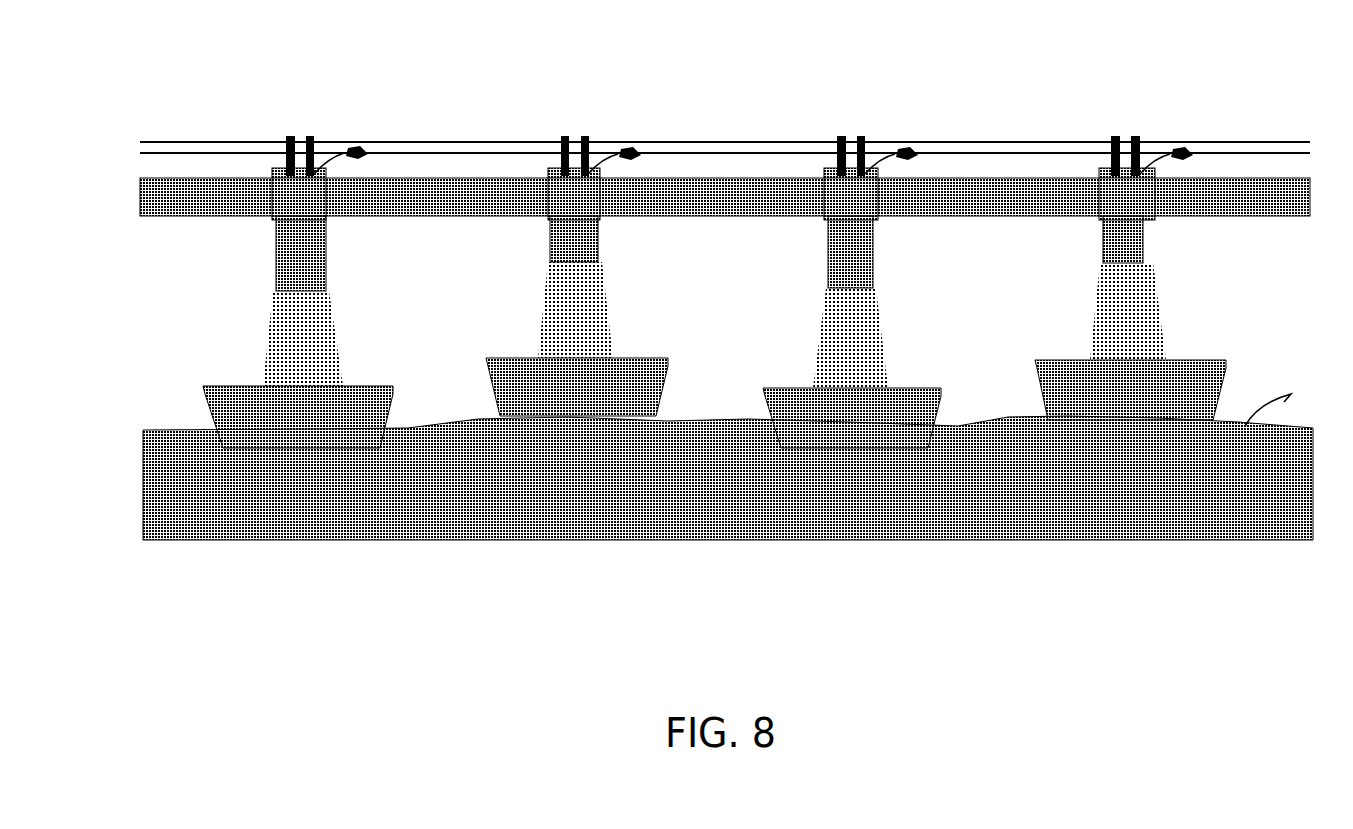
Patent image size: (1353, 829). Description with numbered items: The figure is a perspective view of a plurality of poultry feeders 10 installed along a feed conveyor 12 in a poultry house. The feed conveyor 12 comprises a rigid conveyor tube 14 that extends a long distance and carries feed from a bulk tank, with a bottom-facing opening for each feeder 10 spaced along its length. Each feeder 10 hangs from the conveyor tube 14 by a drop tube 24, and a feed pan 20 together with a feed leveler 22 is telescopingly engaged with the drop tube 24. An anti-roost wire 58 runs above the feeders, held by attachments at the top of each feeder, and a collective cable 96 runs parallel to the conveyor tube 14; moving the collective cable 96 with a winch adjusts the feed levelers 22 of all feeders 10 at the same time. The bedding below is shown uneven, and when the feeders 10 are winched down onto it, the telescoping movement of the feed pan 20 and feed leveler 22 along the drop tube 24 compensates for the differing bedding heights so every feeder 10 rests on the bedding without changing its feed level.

The poultry feeder 10 is at (1150, 229).
The feed conveyor 12 is at (1128, 97).
The conveyor tube 14 is at (1210, 208).
The feed pan 20 is at (934, 386).
The feed leveler 22 is at (880, 338).
The drop tube 24 is at (870, 244).
The anti-roost wire 58 is at (673, 134).
The collective cable 96 is at (757, 145).